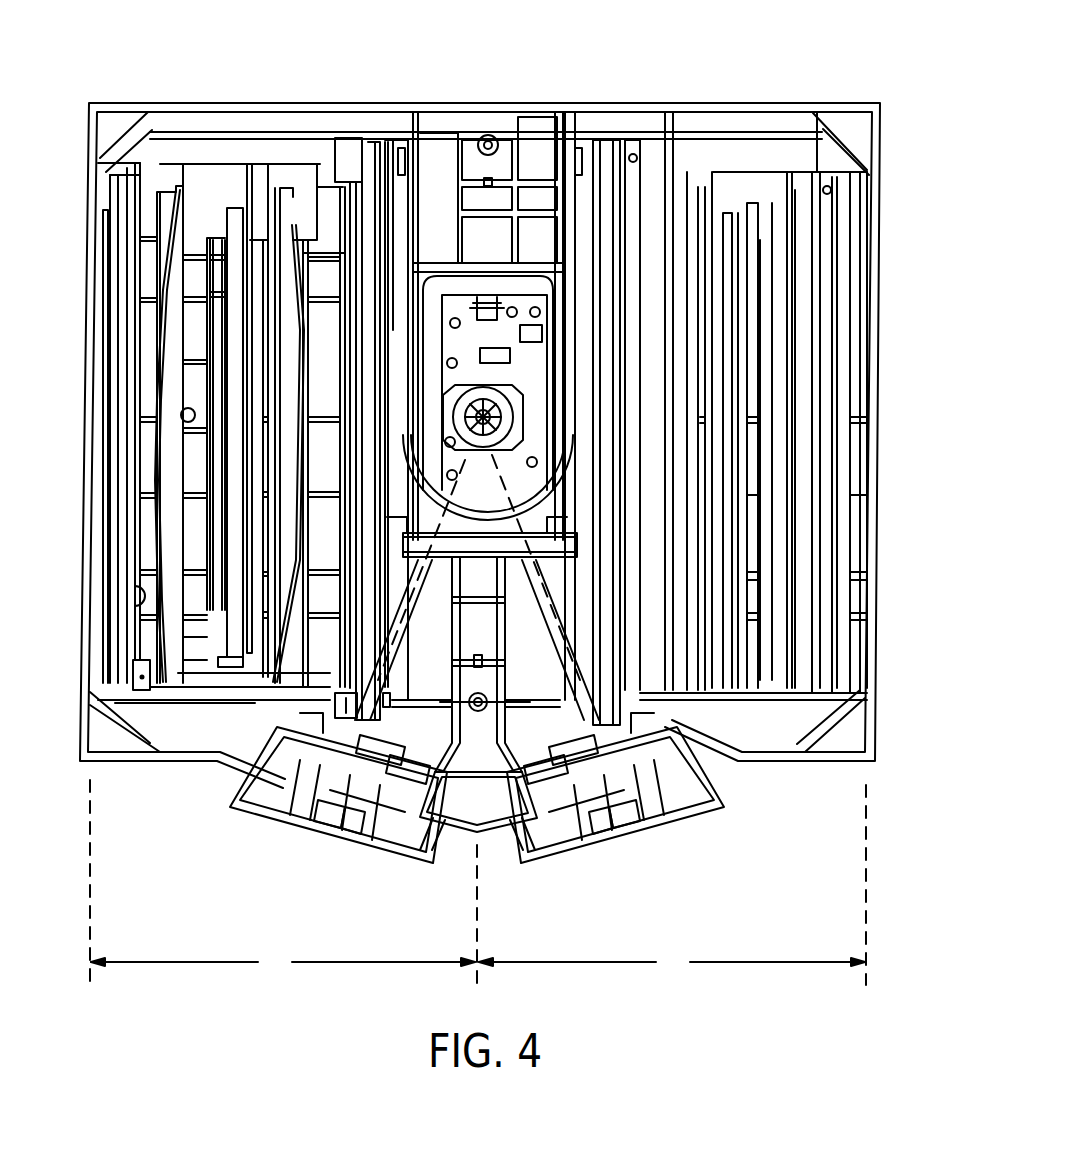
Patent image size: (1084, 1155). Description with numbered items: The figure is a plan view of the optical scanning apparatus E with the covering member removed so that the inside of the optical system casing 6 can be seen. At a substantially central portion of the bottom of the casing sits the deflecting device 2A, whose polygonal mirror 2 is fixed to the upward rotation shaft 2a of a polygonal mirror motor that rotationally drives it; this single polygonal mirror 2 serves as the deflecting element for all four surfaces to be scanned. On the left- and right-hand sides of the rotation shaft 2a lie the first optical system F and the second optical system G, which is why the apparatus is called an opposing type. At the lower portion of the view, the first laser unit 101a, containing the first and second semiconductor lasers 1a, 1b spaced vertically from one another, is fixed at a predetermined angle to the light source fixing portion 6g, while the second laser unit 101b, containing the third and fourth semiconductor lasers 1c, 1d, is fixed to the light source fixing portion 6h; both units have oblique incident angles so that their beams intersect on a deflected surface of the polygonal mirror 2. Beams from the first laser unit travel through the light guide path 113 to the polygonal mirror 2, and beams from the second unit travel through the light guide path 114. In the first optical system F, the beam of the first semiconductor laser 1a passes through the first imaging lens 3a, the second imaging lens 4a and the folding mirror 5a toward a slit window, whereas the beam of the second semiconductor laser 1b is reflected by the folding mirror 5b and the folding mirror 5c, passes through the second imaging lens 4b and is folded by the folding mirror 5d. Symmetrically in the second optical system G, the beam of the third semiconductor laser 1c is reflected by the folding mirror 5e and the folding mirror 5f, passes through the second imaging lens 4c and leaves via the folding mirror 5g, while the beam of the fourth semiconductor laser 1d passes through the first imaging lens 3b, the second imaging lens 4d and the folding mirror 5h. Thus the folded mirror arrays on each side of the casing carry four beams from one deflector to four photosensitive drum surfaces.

The optical scanning apparatus E is at (826, 90).
The optical system casing 6 is at (880, 283).
The folding mirror 5a is at (125, 323).
The second imaging lens 4a is at (162, 385).
The folding mirror 5c is at (228, 450).
The folding mirror 5b is at (230, 662).
The second imaging lens 4b is at (258, 665).
The folding mirror 5d is at (370, 190).
The first imaging lens 3a is at (398, 347).
The first imaging lens 3b is at (577, 347).
The deflecting device 2A is at (543, 374).
The rotation shaft 2a is at (484, 390).
The polygonal mirror 2 is at (447, 492).
The light guide path 113 is at (398, 598).
The light guide path 114 is at (572, 598).
The folding mirror 5g is at (612, 165).
The second imaging lens 4c is at (688, 507).
The folding mirror 5e is at (717, 437).
The folding mirror 5f is at (742, 395).
The second imaging lens 4d is at (806, 345).
The folding mirror 5h is at (848, 243).
The laser unit 101a is at (280, 827).
The light source fixing portion 6g is at (380, 770).
The first semiconductor laser 1a is at (334, 836).
The second semiconductor laser 1b is at (336, 858).
The laser unit 101b is at (674, 829).
The light source fixing portion 6h is at (570, 770).
The third semiconductor laser 1c is at (626, 836).
The fourth semiconductor laser 1d is at (639, 858).
The first optical system F is at (282, 882).
The second optical system G is at (671, 885).